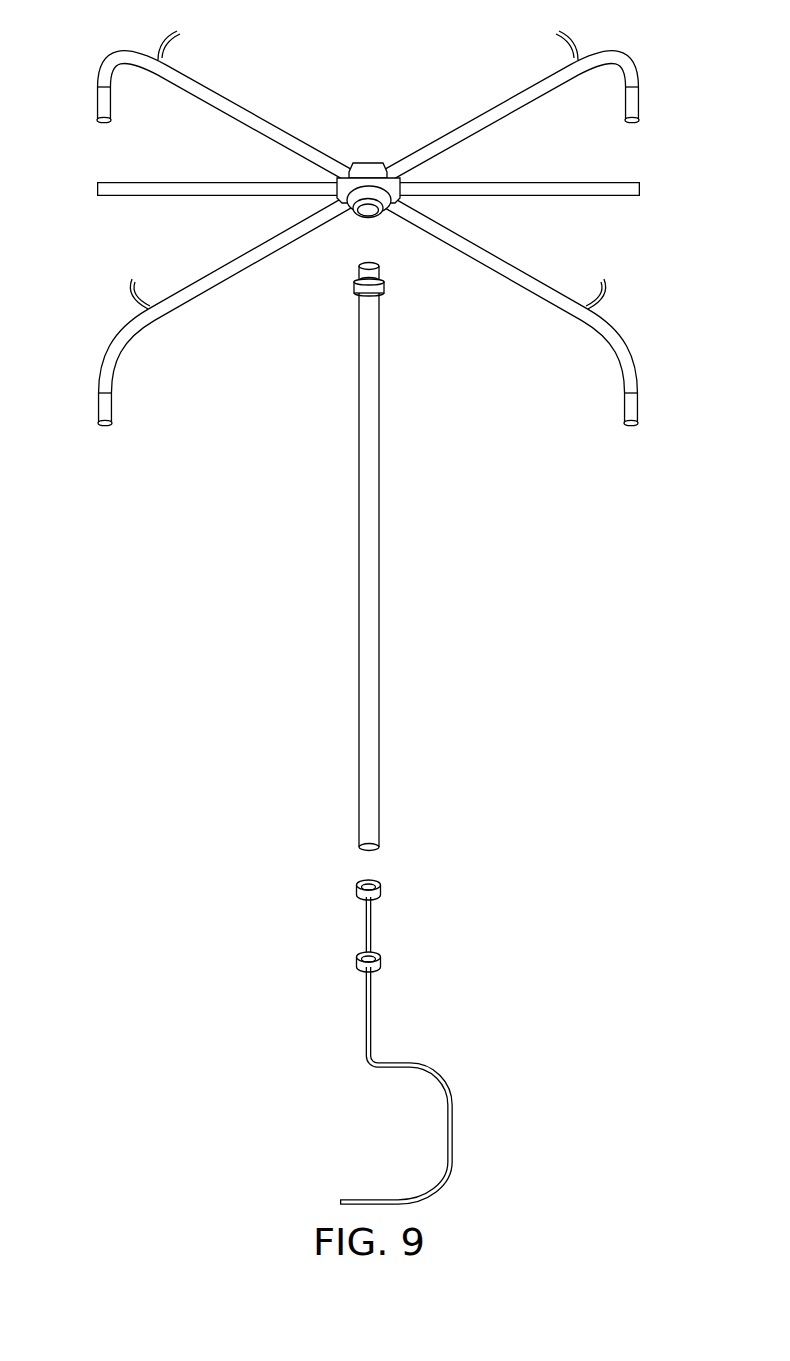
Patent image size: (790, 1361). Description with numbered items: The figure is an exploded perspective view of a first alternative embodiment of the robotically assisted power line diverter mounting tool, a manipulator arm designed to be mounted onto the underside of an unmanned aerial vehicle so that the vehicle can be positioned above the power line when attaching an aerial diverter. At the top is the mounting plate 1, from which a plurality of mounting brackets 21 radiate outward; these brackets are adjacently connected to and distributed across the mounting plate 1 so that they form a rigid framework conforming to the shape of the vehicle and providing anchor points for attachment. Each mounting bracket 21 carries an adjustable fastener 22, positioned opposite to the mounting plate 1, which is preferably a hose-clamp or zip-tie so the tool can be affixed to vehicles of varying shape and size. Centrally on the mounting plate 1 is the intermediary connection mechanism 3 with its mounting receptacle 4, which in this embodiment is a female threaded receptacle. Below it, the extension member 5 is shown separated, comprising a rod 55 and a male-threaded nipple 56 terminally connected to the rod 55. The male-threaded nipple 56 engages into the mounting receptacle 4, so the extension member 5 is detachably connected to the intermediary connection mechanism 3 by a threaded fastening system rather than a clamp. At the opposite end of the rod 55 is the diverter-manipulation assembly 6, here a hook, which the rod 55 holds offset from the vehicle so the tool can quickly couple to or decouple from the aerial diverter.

The mounting plate 1 is at (360, 208).
The intermediary connection mechanism 3 is at (385, 208).
The mounting receptacle 4 is at (367, 215).
The extension member 5 is at (376, 557).
The diverter-manipulation assembly 6 is at (452, 1098).
The mounting brackets 21 is at (252, 122).
The adjustable fasteners 22 is at (179, 38).
The rod 55 is at (372, 538).
The male-threaded nipple 56 is at (374, 275).